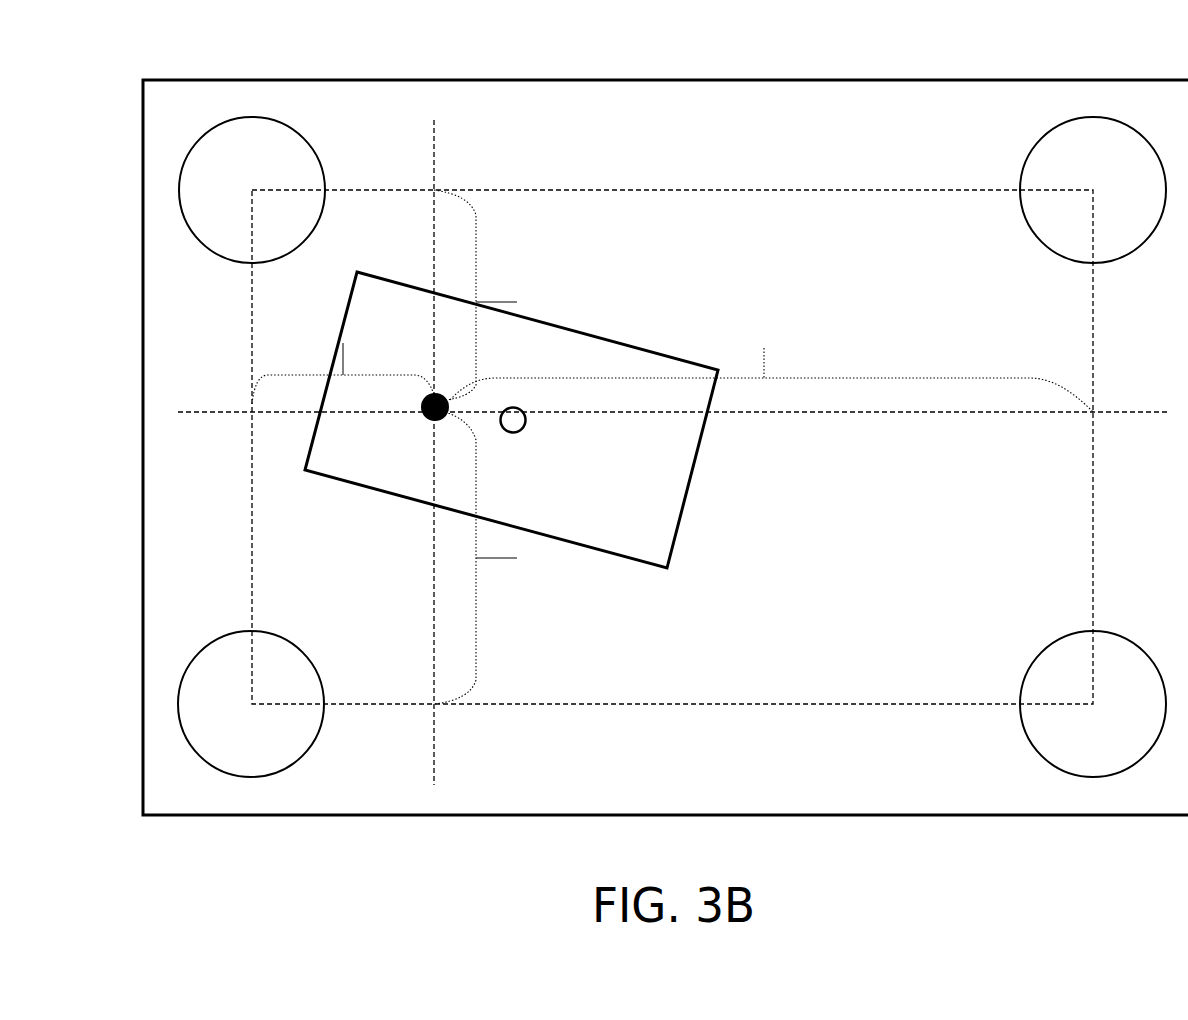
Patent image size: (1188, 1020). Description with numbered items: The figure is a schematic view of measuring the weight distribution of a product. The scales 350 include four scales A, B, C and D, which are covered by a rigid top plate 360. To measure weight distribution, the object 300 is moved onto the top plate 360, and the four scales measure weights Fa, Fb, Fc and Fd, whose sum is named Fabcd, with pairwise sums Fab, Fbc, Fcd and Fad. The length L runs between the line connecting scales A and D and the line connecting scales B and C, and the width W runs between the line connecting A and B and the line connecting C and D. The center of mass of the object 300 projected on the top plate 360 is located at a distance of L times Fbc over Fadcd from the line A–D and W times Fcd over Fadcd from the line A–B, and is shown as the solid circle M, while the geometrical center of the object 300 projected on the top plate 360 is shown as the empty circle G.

The scales 350 is at (148, 47).
The top plate 360 is at (728, 108).
The object 300 is at (653, 486).